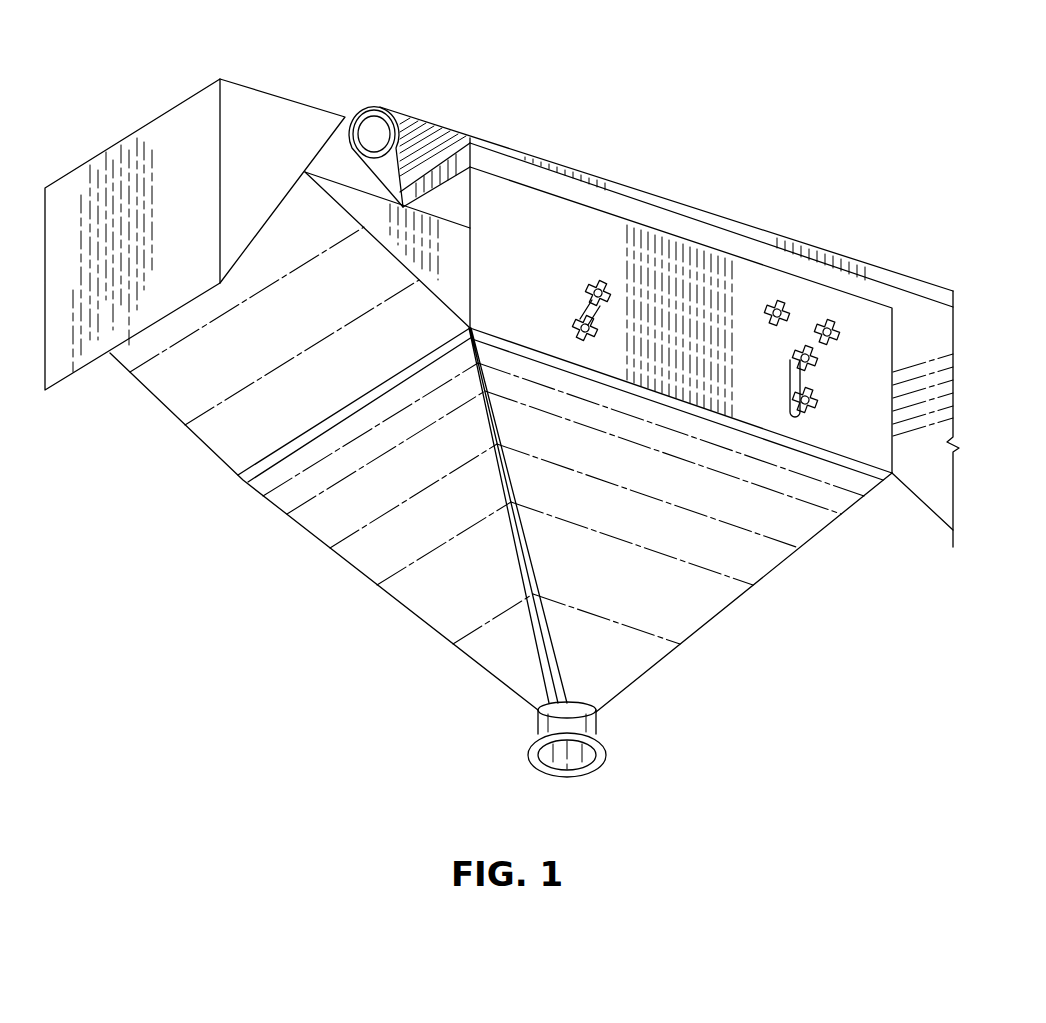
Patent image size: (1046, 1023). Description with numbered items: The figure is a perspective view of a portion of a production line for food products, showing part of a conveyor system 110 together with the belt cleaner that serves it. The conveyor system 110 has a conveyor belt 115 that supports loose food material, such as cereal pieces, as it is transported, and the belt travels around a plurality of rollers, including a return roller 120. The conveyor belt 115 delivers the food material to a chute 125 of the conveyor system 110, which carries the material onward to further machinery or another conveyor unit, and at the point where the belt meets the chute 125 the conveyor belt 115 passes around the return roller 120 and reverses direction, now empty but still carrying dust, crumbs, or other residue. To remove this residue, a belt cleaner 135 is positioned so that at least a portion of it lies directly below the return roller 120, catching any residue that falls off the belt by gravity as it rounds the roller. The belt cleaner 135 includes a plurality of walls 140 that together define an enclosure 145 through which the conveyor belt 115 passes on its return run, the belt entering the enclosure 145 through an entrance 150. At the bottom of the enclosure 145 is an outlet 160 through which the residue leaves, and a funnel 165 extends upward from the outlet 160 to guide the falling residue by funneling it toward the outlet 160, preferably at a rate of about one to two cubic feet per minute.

The conveyor system 110 is at (905, 483).
The conveyor belt 115 is at (918, 310).
The return roller 120 is at (372, 106).
The chute 125 is at (247, 87).
The belt cleaner 135 is at (398, 600).
The walls 140 is at (843, 440).
The enclosure 145 is at (867, 442).
The entrance 150 is at (360, 190).
The outlet 160 is at (577, 777).
The funnel 165 is at (667, 628).